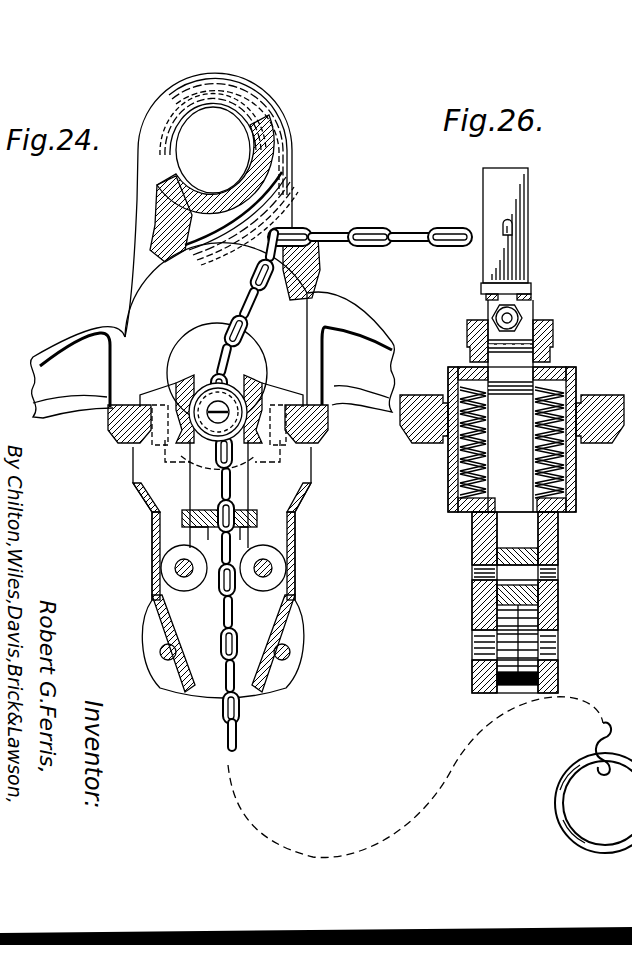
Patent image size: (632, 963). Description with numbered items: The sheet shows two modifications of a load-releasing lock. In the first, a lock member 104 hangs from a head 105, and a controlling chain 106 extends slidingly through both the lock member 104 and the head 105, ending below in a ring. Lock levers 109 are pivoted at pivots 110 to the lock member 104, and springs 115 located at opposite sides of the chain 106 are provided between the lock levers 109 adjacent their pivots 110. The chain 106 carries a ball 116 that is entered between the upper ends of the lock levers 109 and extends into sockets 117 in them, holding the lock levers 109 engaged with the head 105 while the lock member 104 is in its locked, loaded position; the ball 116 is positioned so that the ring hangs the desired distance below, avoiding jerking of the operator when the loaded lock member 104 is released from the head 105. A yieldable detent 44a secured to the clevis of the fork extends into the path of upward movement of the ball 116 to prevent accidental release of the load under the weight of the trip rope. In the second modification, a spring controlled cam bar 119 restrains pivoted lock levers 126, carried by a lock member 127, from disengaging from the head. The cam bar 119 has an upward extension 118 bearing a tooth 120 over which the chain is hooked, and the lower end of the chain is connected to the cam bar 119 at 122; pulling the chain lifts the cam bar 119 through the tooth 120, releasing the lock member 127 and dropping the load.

In FIG. 24, the controlling chain 106 is at (378, 232).
In FIG. 24, the yieldable detent 44a is at (195, 330).
In FIG. 24, the ball 116 is at (245, 374).
In FIG. 24, the sockets 117 is at (174, 383).
In FIG. 24, the head 105 is at (324, 426).
In FIG. 24, the lock member 104 is at (300, 562).
In FIG. 24, the lock levers 109 is at (173, 543).
In FIG. 24, the pivots 110 is at (172, 573).
In FIG. 24, the springs 115 is at (165, 512).
In FIG. 26, the upward extension 118 is at (513, 195).
In FIG. 26, the tooth 120 is at (512, 226).
In FIG. 26, the chain connection 122 is at (500, 283).
In FIG. 26, the cam bar 119 is at (523, 338).
In FIG. 26, the lock levers 126 is at (497, 552).
In FIG. 26, the lock member 127 is at (560, 616).